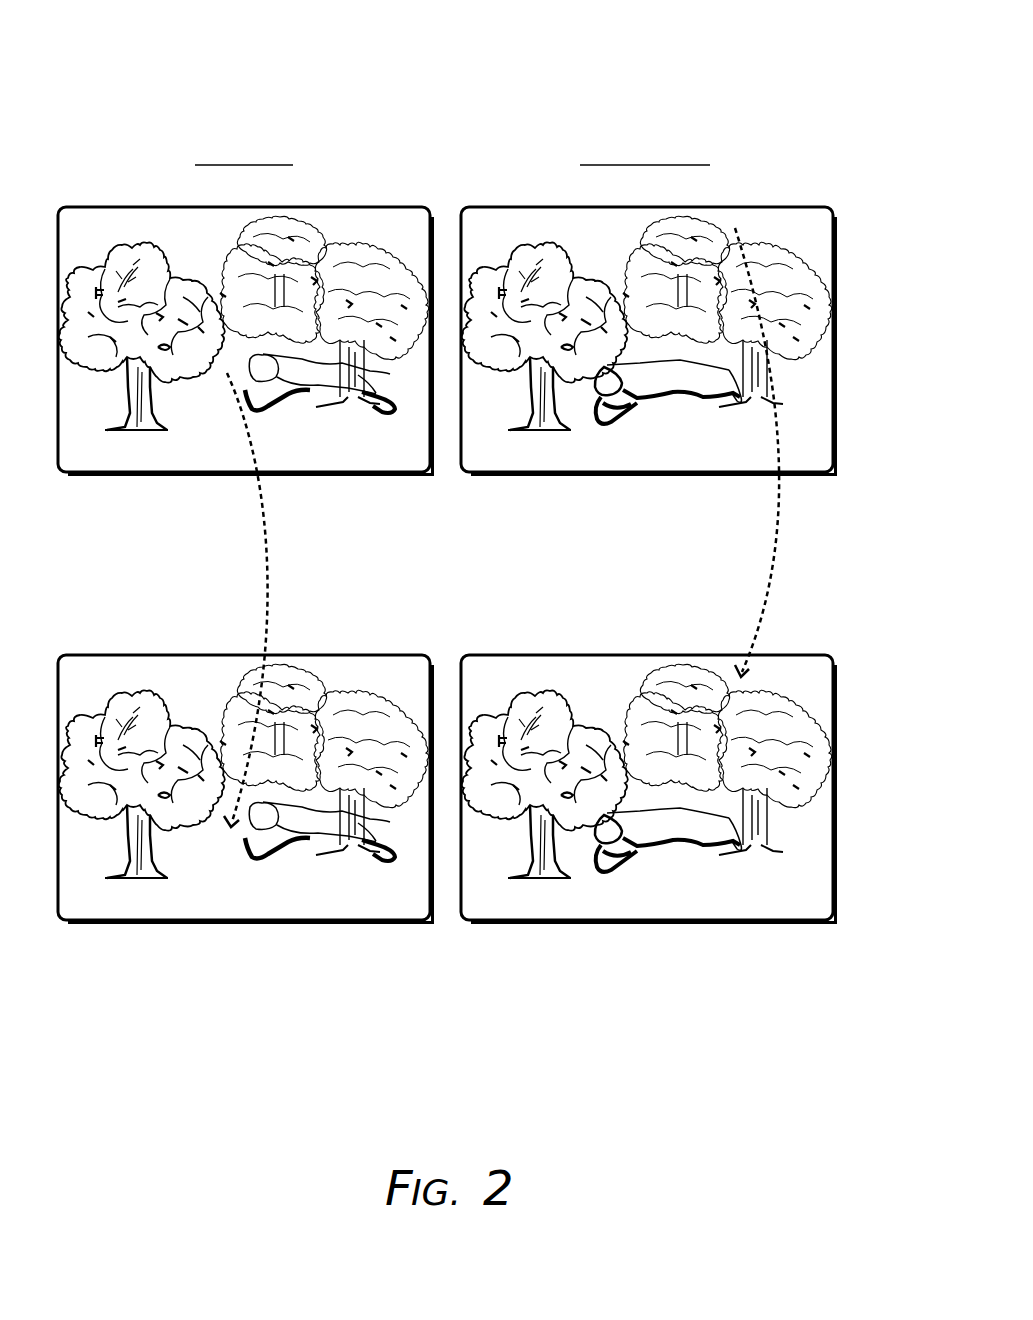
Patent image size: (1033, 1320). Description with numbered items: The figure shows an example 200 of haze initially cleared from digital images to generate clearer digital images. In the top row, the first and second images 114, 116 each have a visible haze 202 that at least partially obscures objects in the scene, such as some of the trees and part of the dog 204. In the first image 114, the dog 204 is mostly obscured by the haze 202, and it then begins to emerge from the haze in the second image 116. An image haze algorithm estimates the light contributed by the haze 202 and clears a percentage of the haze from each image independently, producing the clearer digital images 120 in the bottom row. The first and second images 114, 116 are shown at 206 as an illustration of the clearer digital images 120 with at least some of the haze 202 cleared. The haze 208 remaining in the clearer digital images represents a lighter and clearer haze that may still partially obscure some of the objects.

The example 200 is at (651, 72).
The first image 114 is at (259, 190).
The second image 116 is at (661, 190).
The haze 202 is at (353, 226).
The dog 204 is at (295, 397).
The clearer digital images 120 is at (333, 655).
The illustration of the clearer digital images 206 is at (487, 592).
The haze in the clearer digital images 208 is at (631, 667).